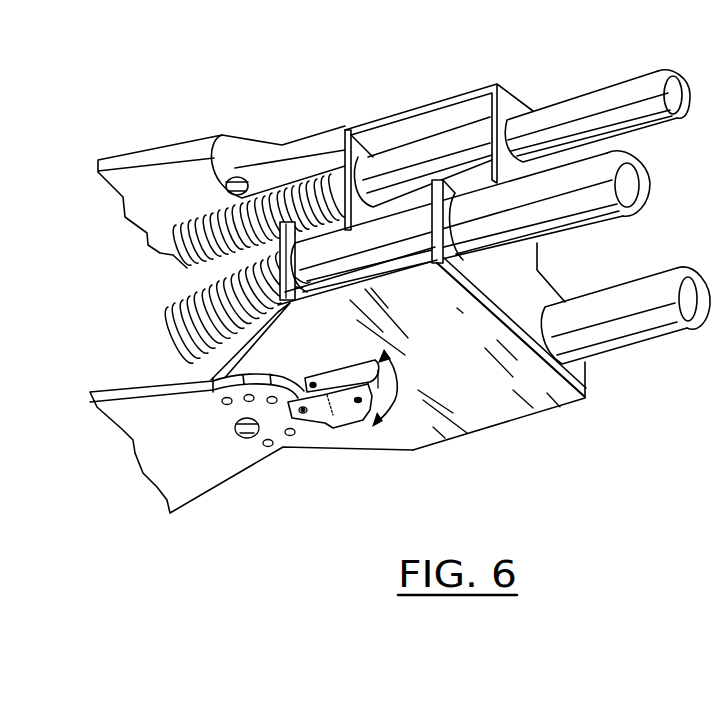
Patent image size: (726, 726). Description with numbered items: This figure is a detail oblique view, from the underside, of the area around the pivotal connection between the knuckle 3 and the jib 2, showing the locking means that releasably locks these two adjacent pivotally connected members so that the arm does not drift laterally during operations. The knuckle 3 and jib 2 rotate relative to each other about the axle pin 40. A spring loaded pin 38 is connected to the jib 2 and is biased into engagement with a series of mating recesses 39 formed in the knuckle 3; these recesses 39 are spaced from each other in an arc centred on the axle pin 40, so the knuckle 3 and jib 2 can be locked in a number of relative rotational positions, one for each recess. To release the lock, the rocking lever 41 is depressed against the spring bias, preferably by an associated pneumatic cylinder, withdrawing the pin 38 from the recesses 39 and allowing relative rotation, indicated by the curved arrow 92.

The jib 2 is at (530, 429).
The knuckle 3 is at (251, 473).
The spring loaded pin 38 is at (306, 414).
The mating recesses 39 is at (224, 404).
The axle pin 40 is at (246, 440).
The rocking lever 41 is at (347, 404).
The pivoting direction arrow 92 is at (398, 377).